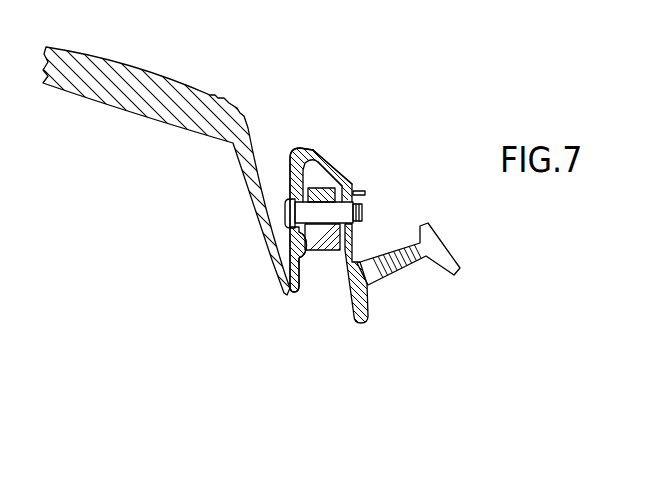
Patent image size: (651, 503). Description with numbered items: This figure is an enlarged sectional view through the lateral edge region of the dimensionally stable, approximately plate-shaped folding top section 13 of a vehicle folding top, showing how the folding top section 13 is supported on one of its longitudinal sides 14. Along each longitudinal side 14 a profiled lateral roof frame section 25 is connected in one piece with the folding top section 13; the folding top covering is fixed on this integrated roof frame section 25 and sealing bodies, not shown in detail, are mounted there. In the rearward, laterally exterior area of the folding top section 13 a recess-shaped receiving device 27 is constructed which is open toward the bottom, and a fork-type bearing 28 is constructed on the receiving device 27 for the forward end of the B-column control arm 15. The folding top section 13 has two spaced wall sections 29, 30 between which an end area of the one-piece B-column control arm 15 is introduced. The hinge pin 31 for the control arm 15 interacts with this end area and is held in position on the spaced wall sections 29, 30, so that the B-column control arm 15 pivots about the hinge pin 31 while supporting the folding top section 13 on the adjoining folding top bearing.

The folding top section 13 is at (222, 78).
The longitudinal sides 14 is at (400, 124).
The B-column control arm 15 is at (323, 187).
The lateral roof frame section 25 is at (478, 258).
The receiving device 27 is at (312, 283).
The fork-type bearing 28 is at (324, 255).
The wall section 29 is at (290, 163).
The wall section 30 is at (347, 183).
The hinge pin 31 is at (333, 212).